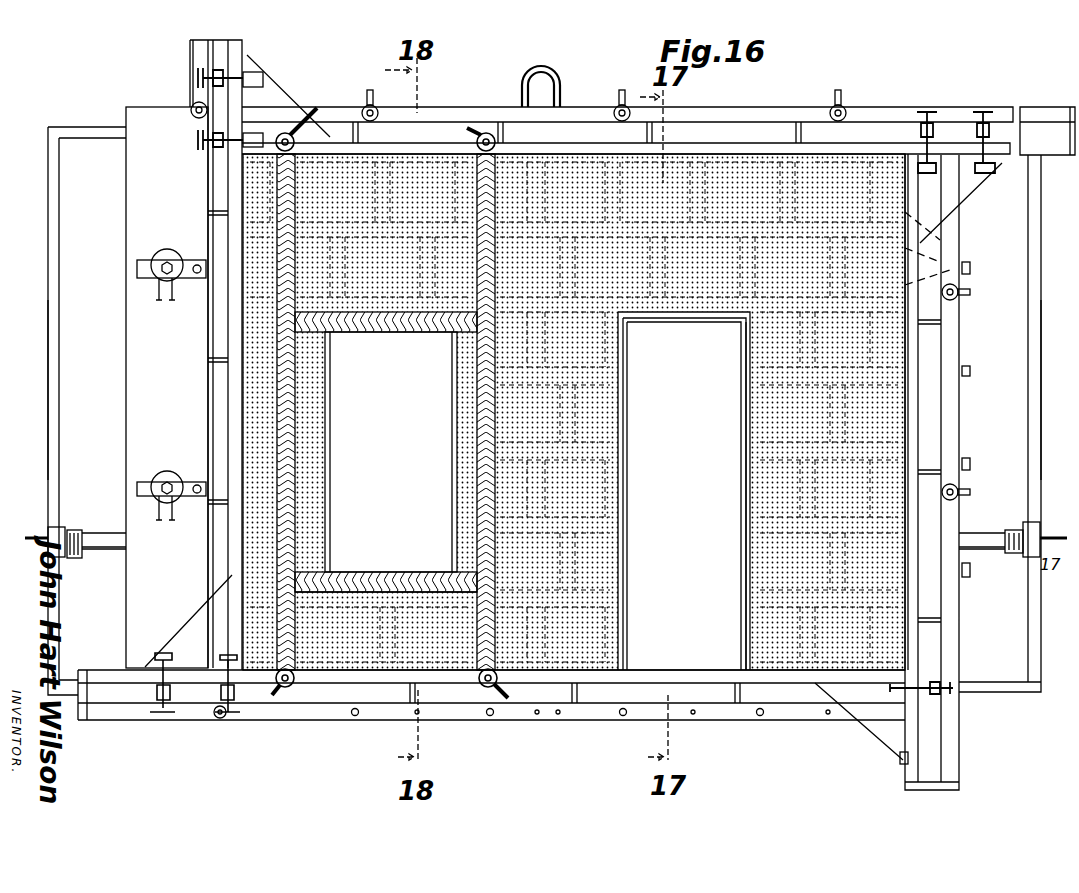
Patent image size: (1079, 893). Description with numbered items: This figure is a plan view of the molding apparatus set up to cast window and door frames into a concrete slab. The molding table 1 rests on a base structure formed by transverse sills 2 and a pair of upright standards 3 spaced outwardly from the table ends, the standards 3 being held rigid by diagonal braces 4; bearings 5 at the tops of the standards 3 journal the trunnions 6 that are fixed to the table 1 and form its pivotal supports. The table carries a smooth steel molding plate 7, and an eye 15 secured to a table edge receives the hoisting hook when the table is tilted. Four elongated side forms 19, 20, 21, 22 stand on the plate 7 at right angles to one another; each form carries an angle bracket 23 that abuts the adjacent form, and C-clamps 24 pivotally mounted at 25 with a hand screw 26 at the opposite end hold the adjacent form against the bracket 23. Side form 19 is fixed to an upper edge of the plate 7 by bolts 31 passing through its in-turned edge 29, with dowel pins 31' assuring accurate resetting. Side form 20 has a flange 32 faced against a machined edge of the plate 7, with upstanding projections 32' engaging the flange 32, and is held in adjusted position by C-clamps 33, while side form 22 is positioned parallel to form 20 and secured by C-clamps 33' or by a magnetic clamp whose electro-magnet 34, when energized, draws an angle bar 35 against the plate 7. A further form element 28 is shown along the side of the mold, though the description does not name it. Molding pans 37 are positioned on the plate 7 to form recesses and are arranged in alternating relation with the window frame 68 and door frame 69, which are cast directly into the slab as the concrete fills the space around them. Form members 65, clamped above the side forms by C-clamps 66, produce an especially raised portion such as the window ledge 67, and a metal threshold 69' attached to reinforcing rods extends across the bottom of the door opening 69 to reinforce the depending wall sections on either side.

The molding table 1 is at (883, 98).
The sills 2 is at (48, 226).
The upright standards 3 is at (48, 528).
The diagonal braces 4 is at (59, 385).
The bearings 5 is at (75, 528).
The trunnions 6 is at (112, 530).
The molding plate 7 is at (126, 240).
The eye 15 is at (560, 72).
The mold side form 19 is at (537, 716).
The mold side form 20 is at (963, 724).
The mold side form 21 is at (792, 108).
The mold side form 22 is at (192, 62).
The angle bracket 23 is at (247, 58).
The C-clamps 24 is at (245, 120).
The pivot 25 is at (268, 120).
The hand screw 26 is at (190, 108).
The form side member 28 is at (845, 148).
The in-turned edge 29 is at (813, 108).
The bolts 31 is at (544, 731).
The dowel pins 31' is at (594, 735).
The flange 32 is at (983, 454).
The upstanding projections 32' is at (987, 366).
The C-clamps 33 is at (671, 283).
The C-clamps 33' is at (183, 95).
The electro-magnet 34 is at (160, 258).
The angle bar 35 is at (152, 278).
The molding pans 37 is at (945, 256).
The wood frame member 65 is at (470, 335).
The C-clamps 66 is at (275, 695).
The window ledge 67 is at (395, 592).
The window frame 68 is at (328, 509).
The door frame 69 is at (684, 491).
The threshold 69' is at (698, 496).